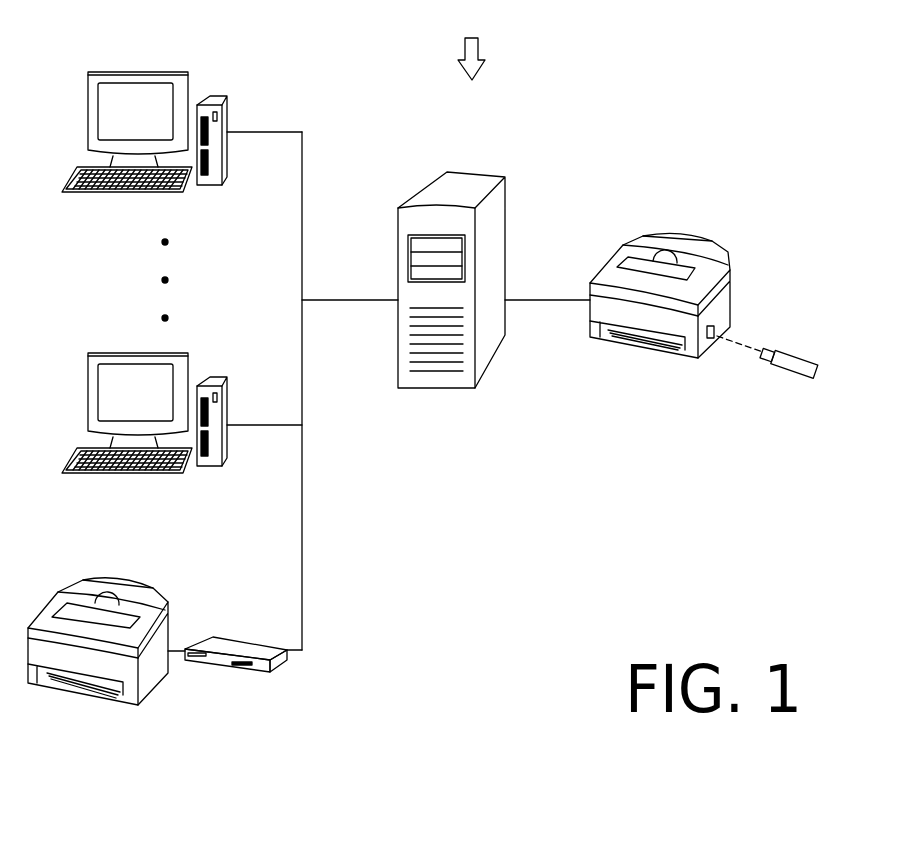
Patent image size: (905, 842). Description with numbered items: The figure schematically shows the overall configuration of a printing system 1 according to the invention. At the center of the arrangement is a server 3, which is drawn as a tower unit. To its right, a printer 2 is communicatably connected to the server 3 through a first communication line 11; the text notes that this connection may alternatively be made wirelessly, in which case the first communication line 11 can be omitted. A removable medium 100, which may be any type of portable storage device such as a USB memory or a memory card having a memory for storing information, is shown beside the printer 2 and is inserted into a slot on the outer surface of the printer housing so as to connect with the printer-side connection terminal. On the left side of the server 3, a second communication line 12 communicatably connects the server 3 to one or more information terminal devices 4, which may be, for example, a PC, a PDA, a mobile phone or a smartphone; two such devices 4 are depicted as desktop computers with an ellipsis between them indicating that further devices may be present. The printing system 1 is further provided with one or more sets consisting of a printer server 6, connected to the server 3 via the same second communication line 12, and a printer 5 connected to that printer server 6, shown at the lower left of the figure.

The printing system 1 is at (471, 44).
The printer 2 is at (647, 356).
The server 3 is at (453, 390).
The information terminal device 4 is at (217, 93).
The printer 5 is at (125, 580).
The printer server 6 is at (237, 637).
The first communication line 11 is at (545, 299).
The second communication line 12 is at (335, 299).
The removable medium 100 is at (790, 372).